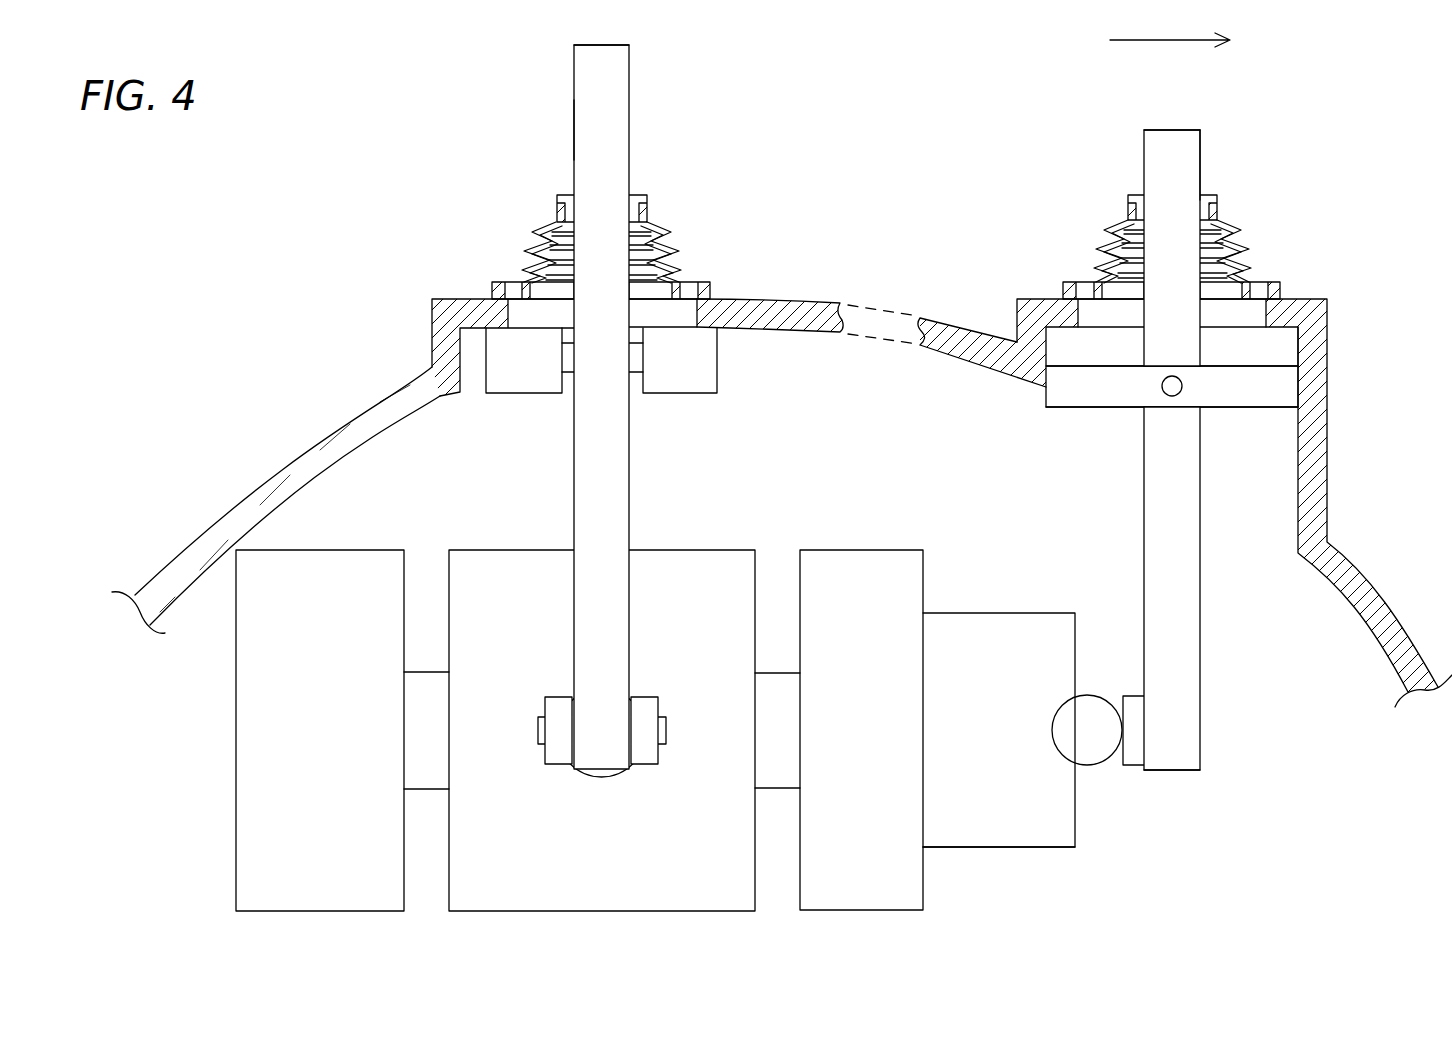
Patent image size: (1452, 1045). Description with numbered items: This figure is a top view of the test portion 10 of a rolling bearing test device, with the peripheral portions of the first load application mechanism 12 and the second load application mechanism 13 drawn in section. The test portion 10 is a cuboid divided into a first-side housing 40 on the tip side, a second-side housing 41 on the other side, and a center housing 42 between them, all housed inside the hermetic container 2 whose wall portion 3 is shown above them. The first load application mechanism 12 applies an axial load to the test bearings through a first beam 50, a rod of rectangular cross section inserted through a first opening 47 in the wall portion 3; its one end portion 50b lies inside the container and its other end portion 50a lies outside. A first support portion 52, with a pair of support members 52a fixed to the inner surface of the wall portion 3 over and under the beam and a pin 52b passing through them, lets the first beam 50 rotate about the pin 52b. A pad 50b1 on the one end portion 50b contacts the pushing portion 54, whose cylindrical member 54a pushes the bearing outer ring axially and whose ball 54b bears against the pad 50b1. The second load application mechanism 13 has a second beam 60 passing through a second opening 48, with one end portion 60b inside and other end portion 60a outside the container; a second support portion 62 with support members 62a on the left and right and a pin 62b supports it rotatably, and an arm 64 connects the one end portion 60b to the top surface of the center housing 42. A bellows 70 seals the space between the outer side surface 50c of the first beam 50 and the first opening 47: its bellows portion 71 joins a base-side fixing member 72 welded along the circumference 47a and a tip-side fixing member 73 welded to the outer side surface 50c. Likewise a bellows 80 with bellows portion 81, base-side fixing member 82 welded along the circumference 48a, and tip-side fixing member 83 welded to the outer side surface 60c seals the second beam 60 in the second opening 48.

The hermetic container 2 is at (203, 500).
The wall portion 3 is at (948, 326).
The test portion 10 is at (783, 484).
The first load application mechanism 12 is at (1260, 816).
The second load application mechanism 13 is at (427, 224).
The first-side housing 40 is at (868, 560).
The second-side housing 41 is at (255, 838).
The center housing 42 is at (698, 560).
The first opening 47 is at (1252, 318).
The circumference of the first opening 47a is at (1266, 292).
The second opening 48 is at (483, 338).
The circumference of the second opening 48a is at (500, 280).
The first beam 50 is at (1190, 418).
The other end portion of the first beam 50a is at (1175, 148).
The one end portion of the first beam 50b is at (1170, 743).
The pad 50b1 is at (1133, 702).
The outer side surface of the first beam 50c is at (1203, 150).
The first support portion 52 is at (1111, 425).
The support members 52a is at (1270, 386).
The pin 52b is at (1180, 395).
The pushing portion 54 is at (1000, 600).
The cylindrical member 54a is at (1000, 832).
The ball 54b is at (1100, 748).
The second beam 60 is at (599, 446).
The other end portion of the second beam 60a is at (590, 68).
The one end portion of the second beam 60b is at (605, 740).
The outer side surface of the second beam 60c is at (574, 130).
The second support portion 62 is at (630, 409).
The support members 62a is at (690, 352).
The pin 62b is at (637, 372).
The arm 64 is at (557, 762).
The bellows 70 is at (1157, 247).
The bellows portion 71 is at (1098, 253).
The base-side fixing member 72 is at (1063, 290).
The tip-side fixing member 73 is at (1133, 205).
The bellows 80 is at (628, 235).
The bellows portion 81 is at (680, 252).
The base-side fixing member 82 is at (705, 288).
The tip-side fixing member 83 is at (650, 200).